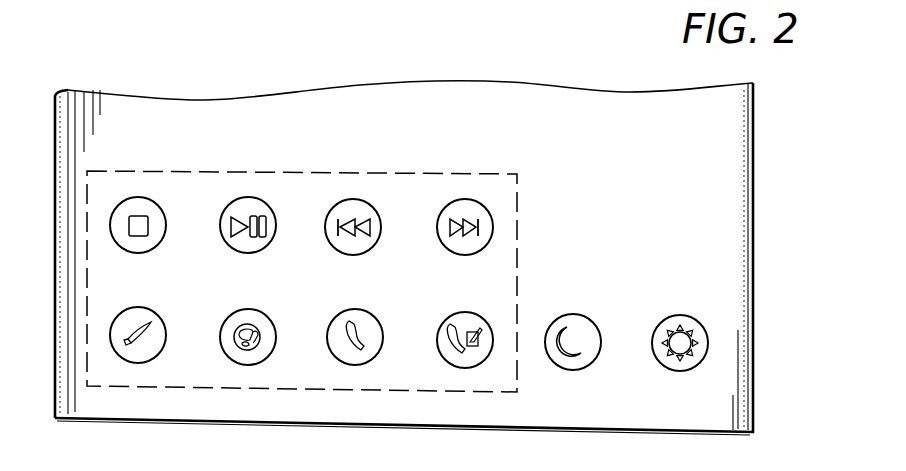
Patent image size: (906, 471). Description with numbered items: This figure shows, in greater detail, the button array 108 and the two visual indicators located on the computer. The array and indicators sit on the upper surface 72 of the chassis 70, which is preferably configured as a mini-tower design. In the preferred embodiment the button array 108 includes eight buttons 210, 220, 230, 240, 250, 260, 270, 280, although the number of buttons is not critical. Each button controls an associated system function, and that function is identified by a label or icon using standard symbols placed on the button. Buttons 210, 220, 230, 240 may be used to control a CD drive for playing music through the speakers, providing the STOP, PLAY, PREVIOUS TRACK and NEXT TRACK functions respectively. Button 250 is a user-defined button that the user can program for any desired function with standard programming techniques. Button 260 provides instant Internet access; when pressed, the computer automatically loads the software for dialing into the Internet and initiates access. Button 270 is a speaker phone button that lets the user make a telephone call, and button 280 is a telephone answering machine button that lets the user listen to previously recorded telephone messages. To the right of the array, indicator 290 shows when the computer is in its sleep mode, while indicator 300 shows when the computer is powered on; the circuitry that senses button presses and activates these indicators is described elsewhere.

The chassis 70 is at (755, 223).
The upper surface 72 is at (700, 165).
The button array 108 is at (513, 171).
The button 210 is at (138, 197).
The button 220 is at (243, 197).
The button 230 is at (353, 197).
The button 240 is at (463, 197).
The user-defined button 250 is at (140, 303).
The button 260 is at (258, 305).
The speaker phone button 270 is at (363, 310).
The telephone answering machine button 280 is at (470, 310).
The indicator 290 is at (578, 313).
The indicator 300 is at (682, 313).